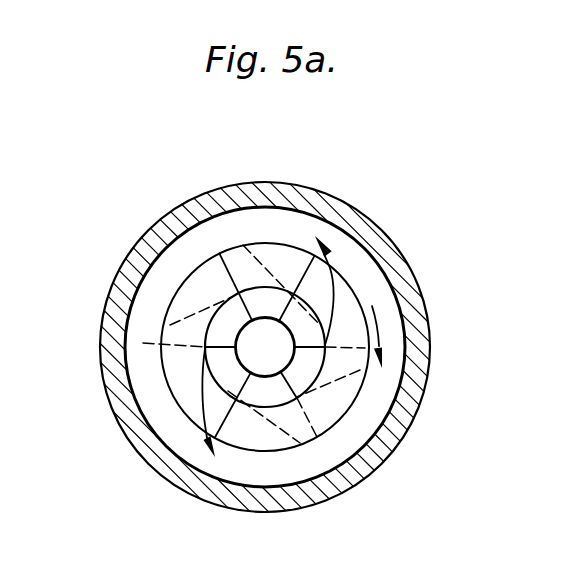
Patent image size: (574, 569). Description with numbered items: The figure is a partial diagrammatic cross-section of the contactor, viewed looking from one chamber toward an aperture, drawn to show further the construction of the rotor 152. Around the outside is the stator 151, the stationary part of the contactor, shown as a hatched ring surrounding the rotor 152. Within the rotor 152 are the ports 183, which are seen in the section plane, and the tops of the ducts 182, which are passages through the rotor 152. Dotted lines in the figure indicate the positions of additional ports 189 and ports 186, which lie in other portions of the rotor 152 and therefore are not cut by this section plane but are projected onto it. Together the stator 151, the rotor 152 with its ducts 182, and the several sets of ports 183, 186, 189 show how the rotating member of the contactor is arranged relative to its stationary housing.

The stator 151 is at (187, 192).
The rotor 152 is at (240, 435).
The ducts 182 is at (143, 342).
The ports 183 is at (333, 269).
The ports 186 is at (190, 331).
The ports 189 is at (271, 273).